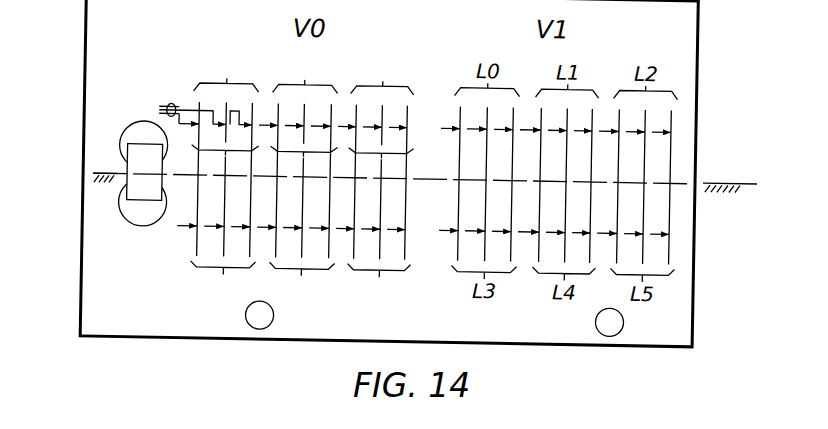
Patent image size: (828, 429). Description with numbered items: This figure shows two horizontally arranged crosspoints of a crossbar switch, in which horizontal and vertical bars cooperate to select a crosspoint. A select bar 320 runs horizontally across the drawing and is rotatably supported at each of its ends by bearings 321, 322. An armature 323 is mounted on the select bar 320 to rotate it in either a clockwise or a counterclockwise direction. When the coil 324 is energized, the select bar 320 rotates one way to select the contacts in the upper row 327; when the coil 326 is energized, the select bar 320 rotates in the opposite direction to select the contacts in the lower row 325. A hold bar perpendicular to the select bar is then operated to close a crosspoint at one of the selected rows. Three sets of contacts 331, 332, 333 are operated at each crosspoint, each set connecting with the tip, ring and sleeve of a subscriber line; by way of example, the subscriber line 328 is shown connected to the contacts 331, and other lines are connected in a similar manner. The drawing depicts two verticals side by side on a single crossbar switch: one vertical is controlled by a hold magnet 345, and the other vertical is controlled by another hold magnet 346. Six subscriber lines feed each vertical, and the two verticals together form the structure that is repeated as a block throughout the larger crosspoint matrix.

The select bar 320 is at (681, 174).
The bearing 321 is at (105, 173).
The bearing 322 is at (754, 174).
The armature 323 is at (162, 166).
The coil 324 is at (152, 121).
The row of contacts 325 is at (195, 242).
The coil 326 is at (118, 210).
The row of contacts 327 is at (705, 119).
The subscriber line 328 is at (166, 103).
The set of contacts 331 is at (224, 176).
The set of contacts 332 is at (303, 177).
The set of contacts 333 is at (380, 179).
The hold magnet 345 is at (276, 315).
The hold magnet 346 is at (626, 316).